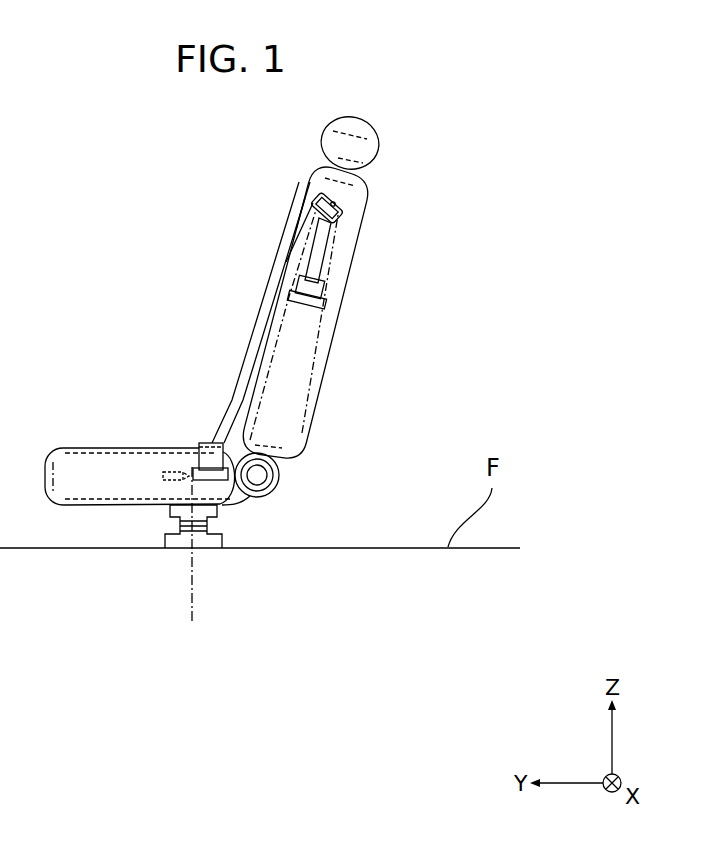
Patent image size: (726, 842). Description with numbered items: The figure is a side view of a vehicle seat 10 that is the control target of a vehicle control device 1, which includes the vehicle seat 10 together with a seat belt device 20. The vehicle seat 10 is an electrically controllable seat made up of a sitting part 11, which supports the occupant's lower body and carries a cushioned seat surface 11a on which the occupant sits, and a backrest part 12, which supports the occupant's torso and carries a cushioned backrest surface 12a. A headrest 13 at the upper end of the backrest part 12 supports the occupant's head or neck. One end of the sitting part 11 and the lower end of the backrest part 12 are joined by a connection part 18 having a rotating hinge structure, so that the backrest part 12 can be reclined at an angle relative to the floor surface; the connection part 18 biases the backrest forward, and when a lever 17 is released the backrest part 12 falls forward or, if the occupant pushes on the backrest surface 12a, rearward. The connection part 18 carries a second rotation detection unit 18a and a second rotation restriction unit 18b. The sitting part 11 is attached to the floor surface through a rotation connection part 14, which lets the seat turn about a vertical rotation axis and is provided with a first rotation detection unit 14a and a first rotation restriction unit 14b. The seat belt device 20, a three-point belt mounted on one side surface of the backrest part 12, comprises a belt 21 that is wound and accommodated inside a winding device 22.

The vehicle control device 1 is at (101, 681).
The vehicle seat 10 is at (222, 288).
The sitting part 11 is at (78, 470).
The seat surface 11a is at (110, 448).
The backrest part 12 is at (303, 392).
The backrest surface 12a is at (302, 207).
The headrest 13 is at (372, 141).
The rotation connection part 14 is at (234, 522).
The first rotation detection unit 14a is at (183, 536).
The first rotation restriction unit 14b is at (200, 536).
The lever 17 is at (163, 486).
The connection part 18 is at (291, 469).
The second rotation detection unit 18a is at (260, 487).
The second rotation restriction unit 18b is at (276, 484).
The seat belt device 20 is at (340, 266).
The belt 21 is at (245, 368).
The winding device 22 is at (312, 293).